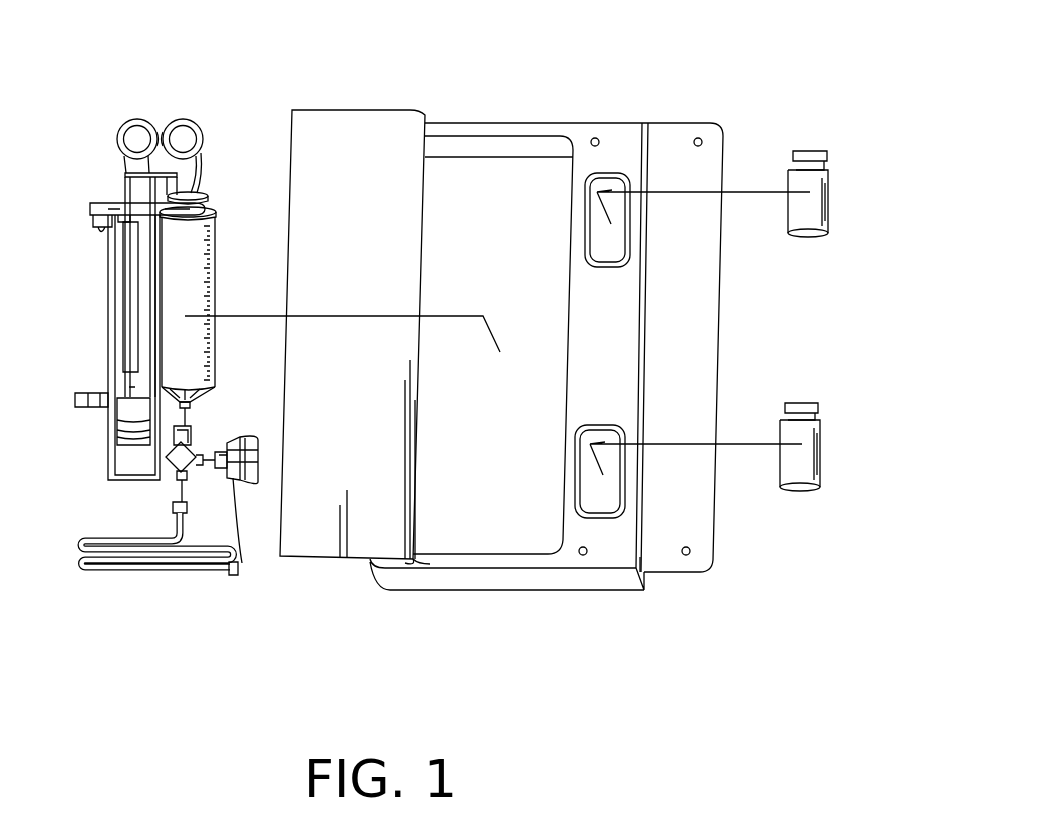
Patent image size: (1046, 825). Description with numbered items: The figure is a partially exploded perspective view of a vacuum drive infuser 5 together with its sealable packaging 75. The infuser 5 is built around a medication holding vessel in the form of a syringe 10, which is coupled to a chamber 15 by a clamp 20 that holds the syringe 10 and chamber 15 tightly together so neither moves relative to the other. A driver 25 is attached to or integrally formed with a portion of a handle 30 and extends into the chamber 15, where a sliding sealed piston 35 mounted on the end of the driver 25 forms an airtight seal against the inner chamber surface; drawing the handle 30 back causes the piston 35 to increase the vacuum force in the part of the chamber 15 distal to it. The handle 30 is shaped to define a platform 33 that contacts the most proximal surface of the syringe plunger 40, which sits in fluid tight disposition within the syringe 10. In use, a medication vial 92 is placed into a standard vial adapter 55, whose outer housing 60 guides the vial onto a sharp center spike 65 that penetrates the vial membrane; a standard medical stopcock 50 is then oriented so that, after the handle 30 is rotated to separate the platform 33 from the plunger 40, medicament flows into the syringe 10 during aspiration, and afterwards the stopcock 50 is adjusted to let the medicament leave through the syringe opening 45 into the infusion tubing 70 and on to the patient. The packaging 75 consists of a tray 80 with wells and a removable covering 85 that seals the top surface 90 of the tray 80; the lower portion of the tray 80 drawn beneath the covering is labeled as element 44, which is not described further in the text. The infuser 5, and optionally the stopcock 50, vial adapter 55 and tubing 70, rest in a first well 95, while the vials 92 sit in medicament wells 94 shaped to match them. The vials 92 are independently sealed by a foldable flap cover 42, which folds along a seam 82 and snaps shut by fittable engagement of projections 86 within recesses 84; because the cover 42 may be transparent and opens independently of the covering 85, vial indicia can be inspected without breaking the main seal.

The infuser 5 is at (181, 97).
The syringe 10 is at (197, 253).
The chamber 15 is at (122, 480).
The clamp 20 is at (100, 205).
The driver 25 is at (125, 377).
The handle 30 is at (202, 147).
The platform 33 is at (190, 193).
The sliding sealed piston 35 is at (128, 442).
The plunger 40 is at (203, 209).
The foldable flap cover 42 is at (710, 135).
The base 44 is at (508, 583).
The syringe opening 45 is at (192, 405).
The stopcock 50 is at (173, 460).
The vial adapter 55 is at (242, 563).
The outer housing 60 is at (255, 482).
The spike 65 is at (255, 462).
The infusion tubing 70 is at (213, 572).
The packaging 75 is at (557, 100).
The tray 80 is at (628, 123).
The seam 82 is at (638, 558).
The recesses 84 is at (585, 555).
The removable covering 85 is at (345, 127).
The projections 86 is at (690, 555).
The top surface 90 is at (525, 555).
The medication vial 92 is at (818, 430).
The medicament wells 94 is at (620, 437).
The first well 95 is at (475, 175).